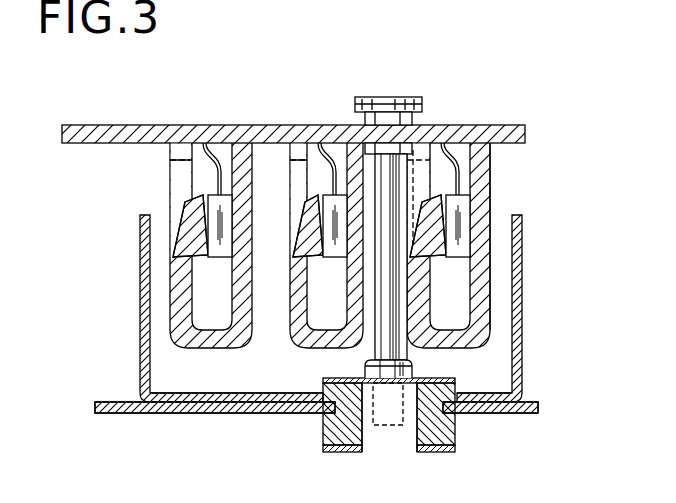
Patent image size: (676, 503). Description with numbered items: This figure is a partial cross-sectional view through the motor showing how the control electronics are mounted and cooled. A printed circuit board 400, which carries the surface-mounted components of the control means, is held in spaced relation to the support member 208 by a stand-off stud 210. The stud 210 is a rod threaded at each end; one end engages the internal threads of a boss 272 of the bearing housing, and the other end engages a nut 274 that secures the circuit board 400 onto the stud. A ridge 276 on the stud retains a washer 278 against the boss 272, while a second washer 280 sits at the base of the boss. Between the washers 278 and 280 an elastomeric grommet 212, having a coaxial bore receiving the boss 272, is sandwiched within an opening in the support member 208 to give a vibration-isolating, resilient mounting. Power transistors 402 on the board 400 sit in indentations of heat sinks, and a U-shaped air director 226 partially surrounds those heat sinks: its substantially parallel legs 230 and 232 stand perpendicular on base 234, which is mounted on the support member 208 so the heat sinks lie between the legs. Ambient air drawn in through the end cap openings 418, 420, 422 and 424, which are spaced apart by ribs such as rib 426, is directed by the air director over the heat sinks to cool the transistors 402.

The support member 208 is at (538, 408).
The stand-off stud 210 is at (405, 348).
The elastomeric grommet 212 is at (455, 420).
The U-shaped air director 226 is at (556, 308).
The leg of air director 230 is at (337, 308).
The leg of air director 232 is at (142, 292).
The base of air director 234 is at (263, 395).
The internally threaded boss 272 is at (398, 440).
The nut 274 is at (355, 100).
The ridge 276 is at (365, 364).
The washer 278 is at (430, 379).
The washer 280 is at (457, 449).
The printed circuit board 400 is at (463, 125).
The power transistor 402 is at (545, 197).
The opening 418 is at (483, 185).
The opening 420 is at (172, 178).
The opening 422 is at (563, 330).
The opening 424 is at (204, 260).
The rib 426 is at (200, 126).